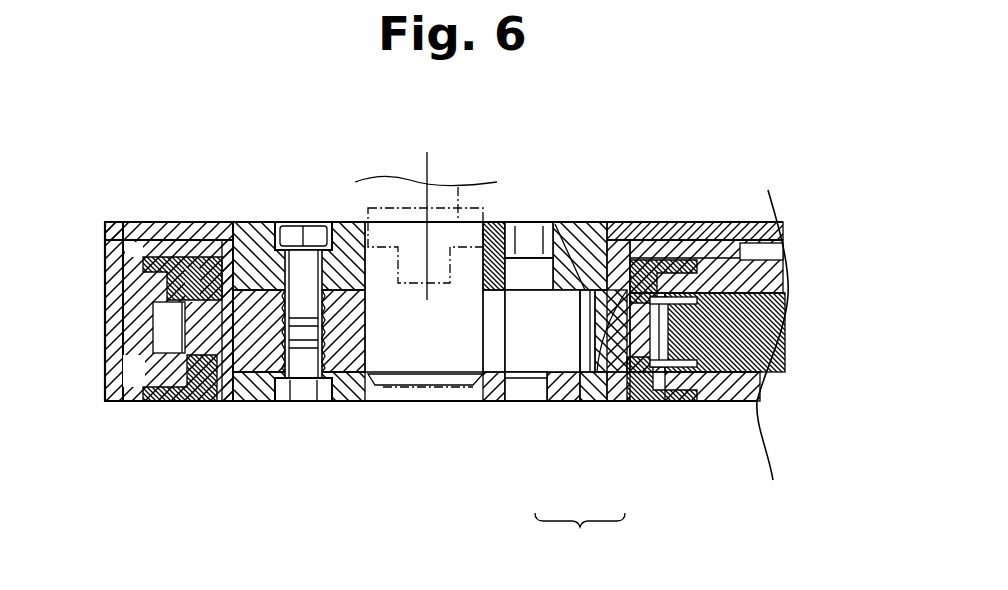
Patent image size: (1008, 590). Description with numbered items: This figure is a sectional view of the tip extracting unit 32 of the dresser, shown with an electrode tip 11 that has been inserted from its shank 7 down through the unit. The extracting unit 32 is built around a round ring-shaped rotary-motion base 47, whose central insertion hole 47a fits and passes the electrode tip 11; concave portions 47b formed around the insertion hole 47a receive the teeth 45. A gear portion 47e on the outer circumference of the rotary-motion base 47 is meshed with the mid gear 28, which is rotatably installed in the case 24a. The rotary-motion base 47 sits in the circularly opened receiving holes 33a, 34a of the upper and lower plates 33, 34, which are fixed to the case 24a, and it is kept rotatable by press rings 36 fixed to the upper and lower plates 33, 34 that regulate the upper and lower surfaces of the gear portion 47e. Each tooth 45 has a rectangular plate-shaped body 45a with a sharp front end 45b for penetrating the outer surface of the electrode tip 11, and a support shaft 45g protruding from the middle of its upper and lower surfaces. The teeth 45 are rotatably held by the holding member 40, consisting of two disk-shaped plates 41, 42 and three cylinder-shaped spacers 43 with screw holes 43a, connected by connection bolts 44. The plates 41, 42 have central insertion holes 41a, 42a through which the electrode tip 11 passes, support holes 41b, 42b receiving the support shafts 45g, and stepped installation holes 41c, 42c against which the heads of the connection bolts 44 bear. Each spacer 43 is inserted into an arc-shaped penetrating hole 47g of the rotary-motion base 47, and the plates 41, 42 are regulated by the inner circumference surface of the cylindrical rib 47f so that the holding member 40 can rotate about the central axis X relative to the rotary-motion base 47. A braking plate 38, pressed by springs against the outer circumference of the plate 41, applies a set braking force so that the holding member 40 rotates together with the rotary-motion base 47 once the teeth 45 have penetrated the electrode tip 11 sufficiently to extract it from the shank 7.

The shank 7 is at (405, 222).
The central axis of rotation X is at (427, 205).
The electrode tip 11 is at (385, 387).
The case 24a is at (107, 223).
The mid gear 28 is at (762, 327).
The tip extracting unit 32 is at (737, 140).
The upper plate 33 is at (107, 278).
The receiving hole 33a is at (681, 222).
The lower plate 34 is at (107, 350).
The receiving hole 34a is at (660, 402).
The press ring 36 is at (137, 222).
The braking plate 38 is at (713, 222).
The holding member 40 is at (580, 538).
The plate 41 is at (583, 402).
The insertion hole 41a is at (478, 222).
The support hole 41b is at (518, 222).
The installation hole 41c is at (282, 222).
The plate 42 is at (553, 402).
The insertion hole 42a is at (450, 402).
The support hole 42b is at (477, 402).
The installation hole 42c is at (260, 402).
The spacer 43 is at (233, 402).
The screw hole 43a is at (313, 222).
The connection bolt 44 is at (302, 222).
The tooth 45 is at (578, 222).
The body 45a is at (613, 402).
The front end 45b is at (483, 343).
The support shaft 45g is at (541, 222).
The rotary-motion base 47 is at (240, 222).
The insertion hole 47a is at (410, 402).
The concave portion 47b is at (607, 222).
The gear portion 47e is at (647, 402).
The rib 47f is at (216, 222).
The penetrating hole 47g is at (337, 402).